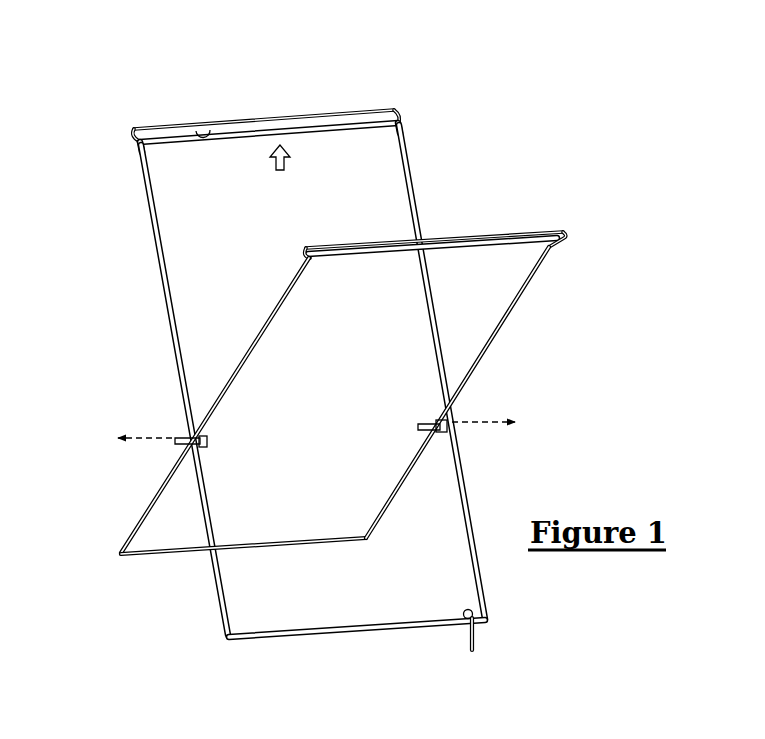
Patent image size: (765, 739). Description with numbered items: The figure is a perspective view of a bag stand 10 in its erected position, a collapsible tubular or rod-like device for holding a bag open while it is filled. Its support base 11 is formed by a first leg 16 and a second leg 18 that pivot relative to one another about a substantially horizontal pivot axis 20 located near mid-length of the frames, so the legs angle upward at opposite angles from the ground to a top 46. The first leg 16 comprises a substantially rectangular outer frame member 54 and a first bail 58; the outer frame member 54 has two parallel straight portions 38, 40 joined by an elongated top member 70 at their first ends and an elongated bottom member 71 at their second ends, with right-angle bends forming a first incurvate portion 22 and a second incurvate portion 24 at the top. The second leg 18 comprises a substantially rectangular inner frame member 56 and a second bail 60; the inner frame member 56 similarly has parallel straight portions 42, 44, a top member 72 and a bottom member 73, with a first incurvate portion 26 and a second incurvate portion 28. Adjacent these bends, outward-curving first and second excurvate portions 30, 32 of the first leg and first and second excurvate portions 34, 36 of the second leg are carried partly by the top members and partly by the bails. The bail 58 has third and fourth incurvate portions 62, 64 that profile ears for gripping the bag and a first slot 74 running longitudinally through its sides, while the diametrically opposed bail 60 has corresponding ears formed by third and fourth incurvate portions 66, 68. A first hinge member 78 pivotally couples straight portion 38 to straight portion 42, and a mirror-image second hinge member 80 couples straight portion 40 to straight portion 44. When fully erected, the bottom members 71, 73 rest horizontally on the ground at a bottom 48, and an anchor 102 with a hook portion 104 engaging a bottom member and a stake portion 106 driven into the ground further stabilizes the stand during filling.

The bag stand 10 is at (600, 137).
The support base 11 is at (112, 478).
The first leg 16 is at (153, 297).
The second leg 18 is at (502, 356).
The pivot axis 20 is at (490, 425).
The first incurvate portion 22 is at (150, 150).
The second incurvate portion 24 is at (410, 127).
The first incurvate portion 26 is at (314, 266).
The second incurvate portion 28 is at (548, 246).
The first excurvate portion 30 is at (128, 139).
The second excurvate portion 32 is at (407, 122).
The first excurvate portion 34 is at (300, 251).
The second excurvate portion 36 is at (540, 235).
The straight portion 38 is at (160, 210).
The straight portion 40 is at (422, 190).
The straight portion 42 is at (245, 354).
The straight portion 44 is at (510, 318).
The top 46 is at (184, 100).
The bottom 48 is at (280, 672).
The outer frame member 54 is at (157, 317).
The inner frame member 56 is at (482, 375).
The first bail 58 is at (245, 106).
The second bail 60 is at (498, 232).
The third incurvate portion 62 is at (133, 126).
The fourth incurvate portion 64 is at (396, 108).
The third incurvate portion 66 is at (302, 250).
The fourth incurvate portion 68 is at (565, 235).
The top member 70 is at (222, 138).
The bottom member 71 is at (378, 630).
The top member 72 is at (400, 250).
The bottom member 73 is at (290, 548).
The first slot 74 is at (214, 127).
The first hinge member 78 is at (165, 425).
The second hinge member 80 is at (410, 425).
The anchor 102 is at (292, 165).
The hook portion 104 is at (465, 610).
The stake portion 106 is at (478, 632).